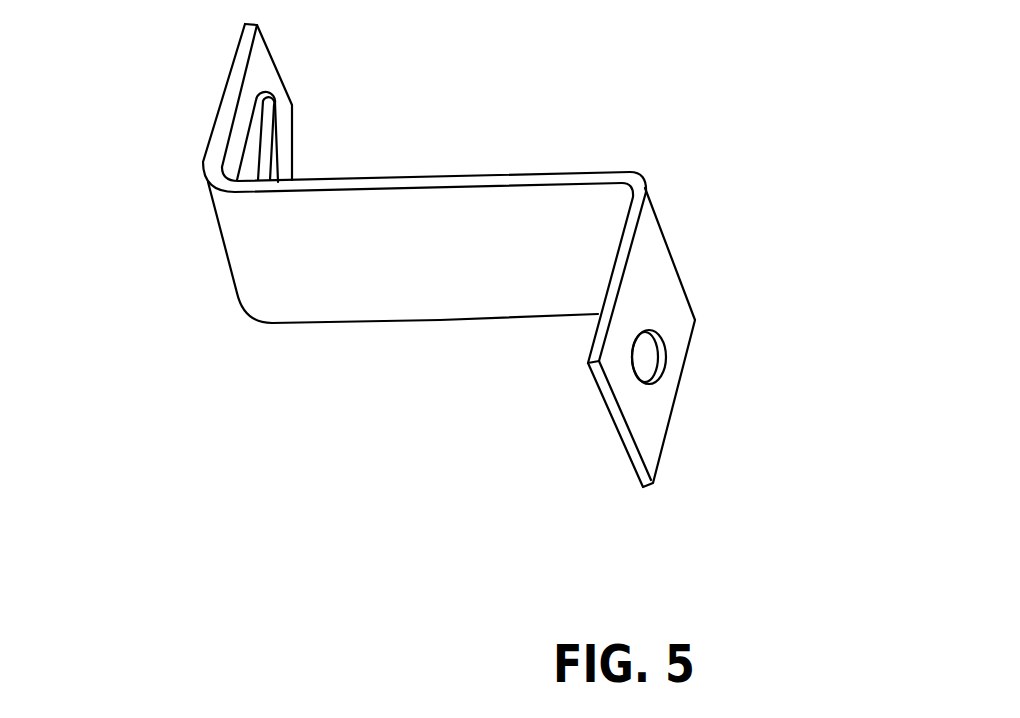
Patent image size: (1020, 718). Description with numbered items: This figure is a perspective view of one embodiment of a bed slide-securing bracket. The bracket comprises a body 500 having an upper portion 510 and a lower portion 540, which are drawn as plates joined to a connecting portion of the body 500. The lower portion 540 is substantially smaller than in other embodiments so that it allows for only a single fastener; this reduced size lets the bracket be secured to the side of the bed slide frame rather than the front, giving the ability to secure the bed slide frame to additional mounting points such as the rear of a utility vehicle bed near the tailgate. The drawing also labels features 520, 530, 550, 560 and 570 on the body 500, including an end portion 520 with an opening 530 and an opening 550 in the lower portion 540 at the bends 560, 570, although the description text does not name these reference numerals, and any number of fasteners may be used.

The body 500 is at (478, 276).
The upper portion 510 is at (322, 298).
The first tab 520 is at (193, 103).
The slot 530 is at (260, 117).
The lower portion 540 is at (648, 412).
The hole 550 is at (652, 358).
The second bend 560 is at (768, 237).
The first bend 570 is at (198, 243).